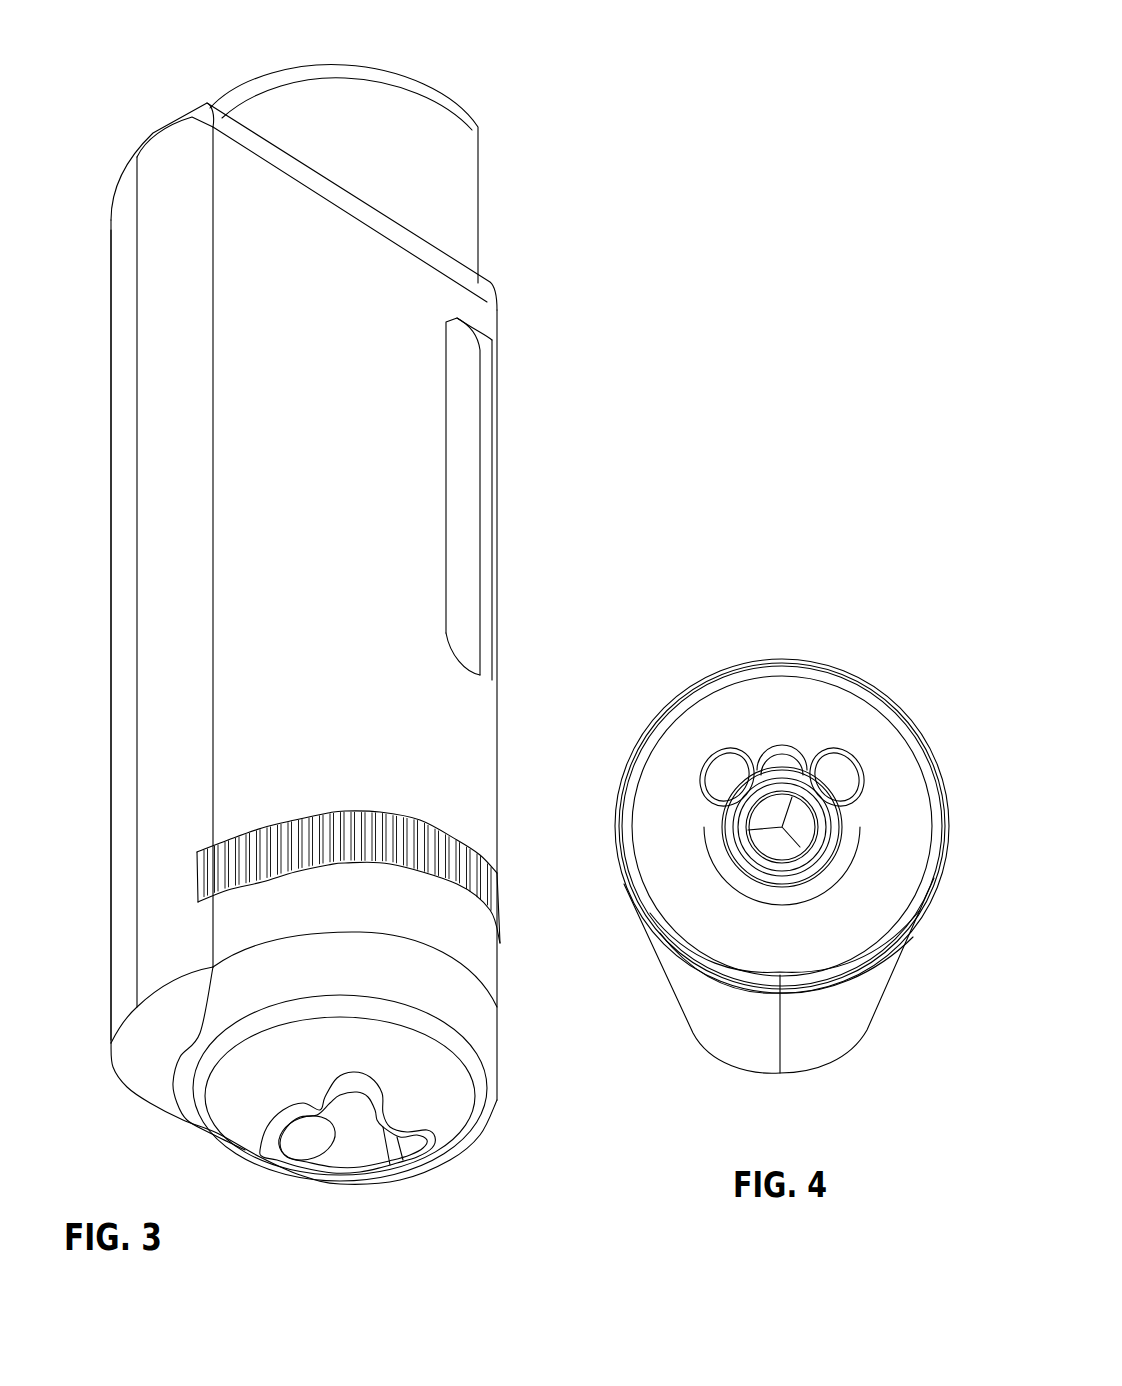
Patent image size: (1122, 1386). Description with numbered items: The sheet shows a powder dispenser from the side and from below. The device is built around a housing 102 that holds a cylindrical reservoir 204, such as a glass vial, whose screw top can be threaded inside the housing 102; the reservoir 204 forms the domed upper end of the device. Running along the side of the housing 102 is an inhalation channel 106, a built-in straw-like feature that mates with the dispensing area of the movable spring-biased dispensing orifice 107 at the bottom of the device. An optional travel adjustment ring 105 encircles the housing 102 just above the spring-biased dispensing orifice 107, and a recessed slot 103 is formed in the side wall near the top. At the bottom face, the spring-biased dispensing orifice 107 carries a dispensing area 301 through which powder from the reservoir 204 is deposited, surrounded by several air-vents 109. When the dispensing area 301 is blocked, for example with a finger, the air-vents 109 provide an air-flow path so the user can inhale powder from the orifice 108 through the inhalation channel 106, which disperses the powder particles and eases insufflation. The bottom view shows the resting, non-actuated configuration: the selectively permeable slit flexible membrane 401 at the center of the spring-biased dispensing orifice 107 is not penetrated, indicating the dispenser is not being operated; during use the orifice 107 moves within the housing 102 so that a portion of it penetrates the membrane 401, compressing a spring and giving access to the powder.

In FIG. 3, the housing 102 is at (482, 943).
In FIG. 4, the housing 102 is at (703, 1002).
In FIG. 3, the slot 103 is at (465, 448).
In FIG. 3, the travel adjustment ring 105 is at (465, 872).
In FIG. 3, the inhalation channel 106 is at (143, 405).
In FIG. 3, the spring-biased dispensing orifice 107 is at (463, 1003).
In FIG. 4, the spring-biased dispensing orifice 107 is at (827, 713).
In FIG. 3, the orifice 108 is at (153, 135).
In FIG. 3, the air-vents 109 is at (408, 1148).
In FIG. 4, the air-vents 109 is at (840, 765).
In FIG. 3, the reservoir 204 is at (443, 170).
In FIG. 3, the dispensing area 301 is at (358, 1140).
In FIG. 4, the selectively permeable slit flexible membrane 401 is at (798, 835).